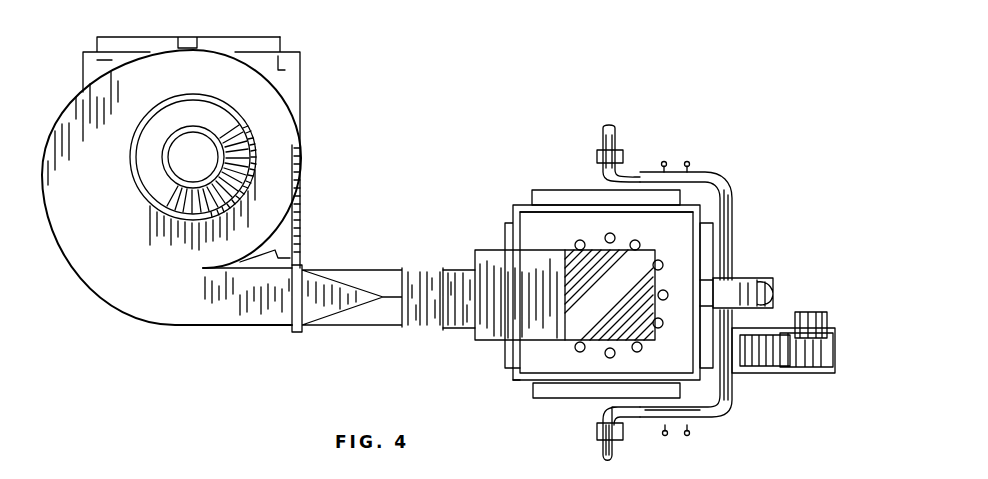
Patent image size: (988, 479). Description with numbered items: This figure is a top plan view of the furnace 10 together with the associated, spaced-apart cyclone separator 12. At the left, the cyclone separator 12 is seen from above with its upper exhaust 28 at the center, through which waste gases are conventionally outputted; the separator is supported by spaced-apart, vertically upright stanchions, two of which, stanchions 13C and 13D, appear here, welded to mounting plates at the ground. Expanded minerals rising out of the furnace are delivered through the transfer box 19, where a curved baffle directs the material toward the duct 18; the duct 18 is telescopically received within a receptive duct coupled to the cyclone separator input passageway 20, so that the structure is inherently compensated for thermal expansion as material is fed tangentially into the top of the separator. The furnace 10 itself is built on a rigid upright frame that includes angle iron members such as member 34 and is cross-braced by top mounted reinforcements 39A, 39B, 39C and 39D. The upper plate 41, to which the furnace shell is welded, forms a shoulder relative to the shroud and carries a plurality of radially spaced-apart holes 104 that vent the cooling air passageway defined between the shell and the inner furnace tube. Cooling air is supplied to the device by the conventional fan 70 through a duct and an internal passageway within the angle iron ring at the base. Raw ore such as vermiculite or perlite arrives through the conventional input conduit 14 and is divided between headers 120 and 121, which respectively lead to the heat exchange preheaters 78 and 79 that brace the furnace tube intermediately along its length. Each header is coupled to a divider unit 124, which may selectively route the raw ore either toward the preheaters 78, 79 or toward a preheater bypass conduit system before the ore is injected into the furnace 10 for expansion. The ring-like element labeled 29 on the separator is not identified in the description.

The furnace 10 is at (592, 139).
The cyclone separator 12 is at (322, 205).
The stanchion 13C is at (97, 52).
The stanchion 13D is at (282, 40).
The conduit 14 is at (735, 285).
The duct 18 is at (463, 290).
The transfer box 19 is at (510, 315).
The cyclone separator input passageway 20 is at (377, 283).
The upper exhaust 28 is at (214, 118).
The inlet ring 29 is at (267, 118).
The angle iron member 34 is at (515, 383).
The top mounted reinforcement 39A is at (546, 395).
The top mounted reinforcement 39B is at (640, 203).
The top mounted reinforcement 39C is at (508, 228).
The top mounted reinforcement 39D is at (700, 352).
The upper plate 41 is at (568, 220).
The fan 70 is at (808, 310).
The preheater 78 is at (594, 402).
The preheater 79 is at (622, 163).
The holes 104 is at (614, 233).
The header 120 is at (727, 415).
The header 121 is at (727, 213).
The divider unit 124 is at (692, 164).